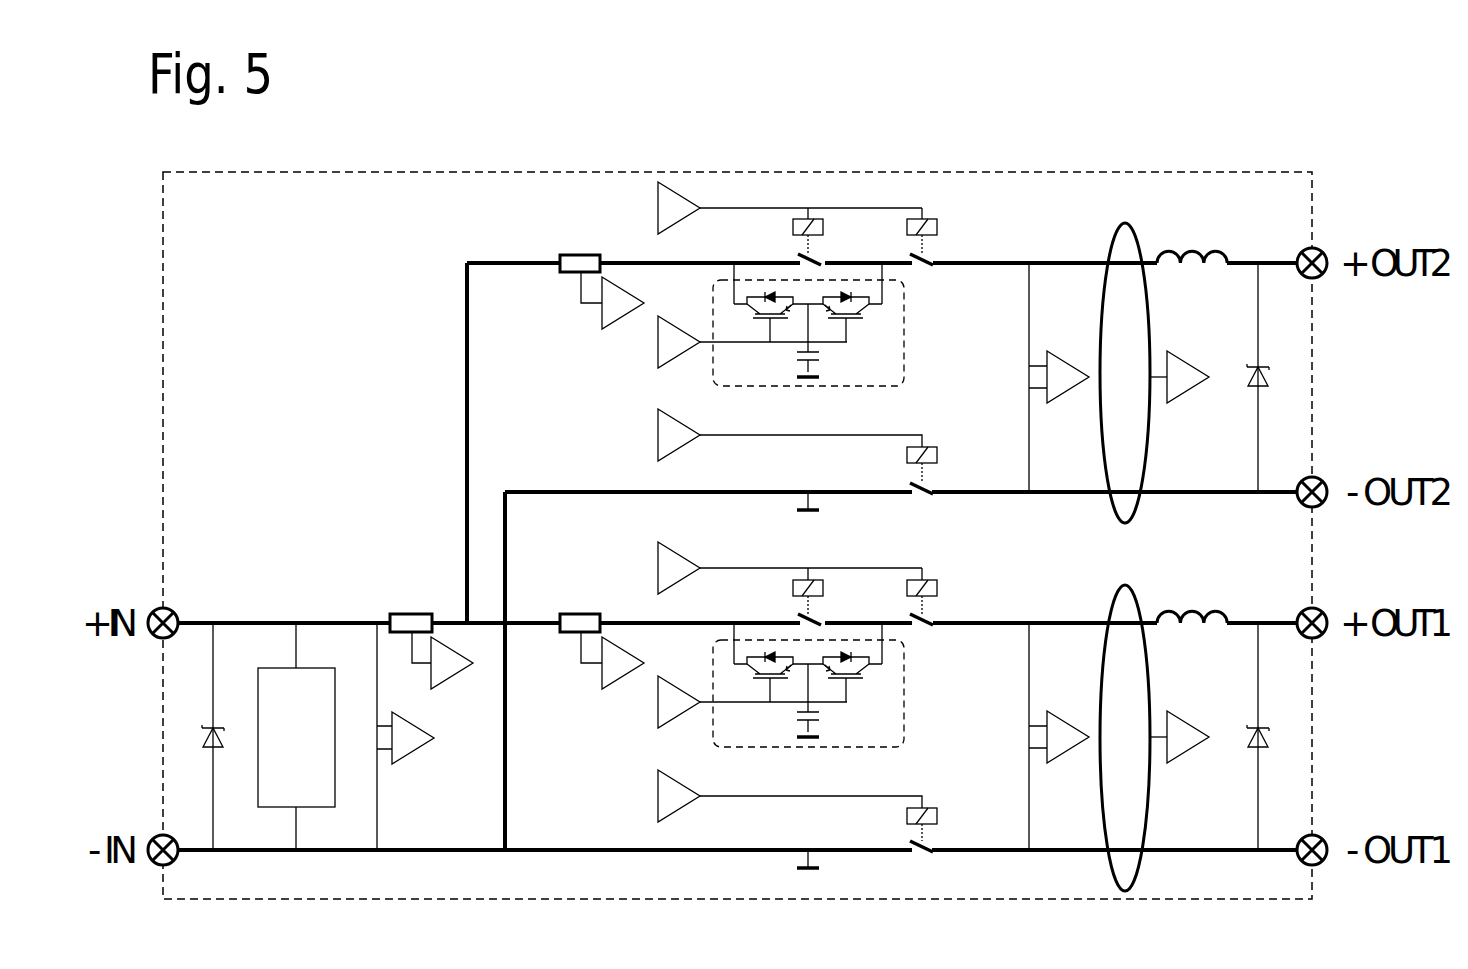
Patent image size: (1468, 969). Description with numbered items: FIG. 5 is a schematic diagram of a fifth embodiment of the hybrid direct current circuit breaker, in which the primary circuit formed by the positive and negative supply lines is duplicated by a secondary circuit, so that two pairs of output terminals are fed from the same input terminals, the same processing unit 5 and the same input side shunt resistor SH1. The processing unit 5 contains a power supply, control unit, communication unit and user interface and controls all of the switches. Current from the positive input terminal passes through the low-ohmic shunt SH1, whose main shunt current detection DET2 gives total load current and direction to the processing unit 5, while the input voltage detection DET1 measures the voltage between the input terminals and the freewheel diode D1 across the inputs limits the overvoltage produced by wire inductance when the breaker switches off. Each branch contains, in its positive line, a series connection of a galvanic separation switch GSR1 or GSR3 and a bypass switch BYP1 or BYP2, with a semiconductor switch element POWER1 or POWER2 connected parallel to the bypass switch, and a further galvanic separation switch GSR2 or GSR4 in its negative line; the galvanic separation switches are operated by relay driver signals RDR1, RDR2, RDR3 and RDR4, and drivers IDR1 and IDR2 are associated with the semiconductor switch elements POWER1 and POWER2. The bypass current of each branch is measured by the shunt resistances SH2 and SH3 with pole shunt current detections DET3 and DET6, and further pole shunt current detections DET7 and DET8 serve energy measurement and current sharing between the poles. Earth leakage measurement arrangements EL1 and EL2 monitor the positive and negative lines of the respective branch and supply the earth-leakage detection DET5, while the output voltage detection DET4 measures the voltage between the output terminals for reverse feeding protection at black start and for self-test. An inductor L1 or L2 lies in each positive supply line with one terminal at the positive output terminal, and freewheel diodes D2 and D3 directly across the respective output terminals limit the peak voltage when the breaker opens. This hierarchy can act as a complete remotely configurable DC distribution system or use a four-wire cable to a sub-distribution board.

The processing unit 5 is at (321, 682).
The input side shunt resistor SH1 is at (411, 612).
The shunt resistance SH2 is at (580, 612).
The shunt resistance SH3 is at (580, 252).
The input voltage detection DET1 is at (405, 736).
The main shunt current detection DET2 is at (442, 660).
The pole shunt current detection DET3 is at (612, 660).
The output voltage detection DET4 is at (1059, 736).
The earth-leakage detection DET5 is at (1179, 737).
The pole shunt current detection DET6 is at (612, 300).
The pole shunt current detection DET7 is at (1059, 377).
The pole shunt current detection DET8 is at (1179, 377).
The relay driver RDR1 is at (790, 568).
The relay driver signal RDR2 is at (790, 796).
The relay driver RDR3 is at (790, 208).
The relay driver RDR4 is at (790, 435).
The IGBT driver IDR1 is at (752, 702).
The IGBT driver IDR2 is at (752, 342).
The bypass switch BYP1 is at (823, 602).
The bypass relay BYP2 is at (823, 242).
The first galvanic separation switch GSR1 is at (906, 602).
The second galvanic separation switch GSR2 is at (906, 830).
The galvanic separation relay GSR3 is at (906, 242).
The galvanic separation relay GSR4 is at (906, 470).
The semiconductor switch element POWER1 is at (808, 685).
The power switching module POWER2 is at (808, 324).
The earth leakage measurement arrangement EL1 is at (1125, 727).
The electronic load / energy storage EL2 is at (1125, 363).
The inductor L1 is at (1192, 606).
The inductor L2 is at (1192, 246).
The first diode D1 is at (202, 736).
The second diode D2 is at (1270, 736).
The protection diode D3 is at (1270, 377).